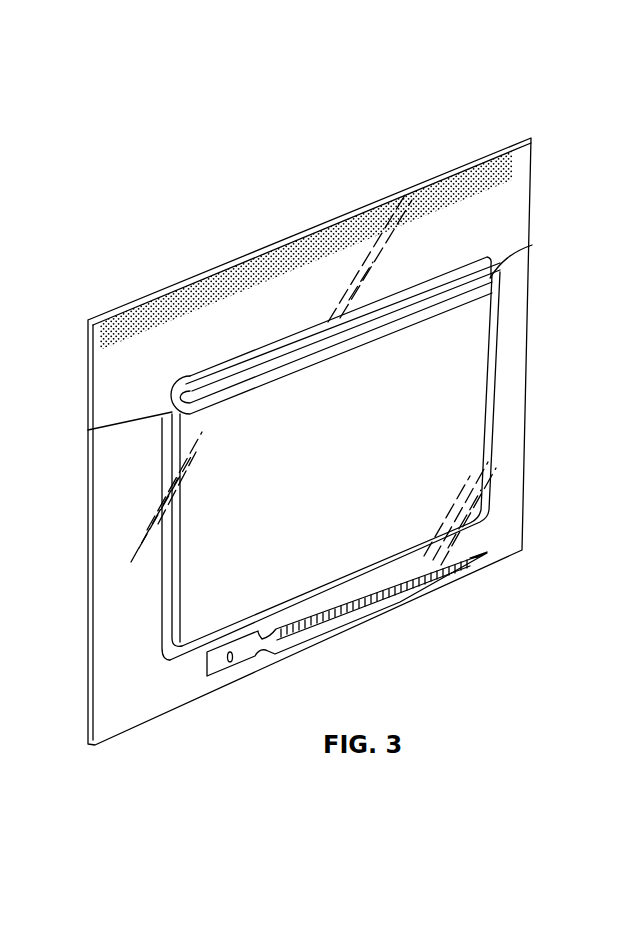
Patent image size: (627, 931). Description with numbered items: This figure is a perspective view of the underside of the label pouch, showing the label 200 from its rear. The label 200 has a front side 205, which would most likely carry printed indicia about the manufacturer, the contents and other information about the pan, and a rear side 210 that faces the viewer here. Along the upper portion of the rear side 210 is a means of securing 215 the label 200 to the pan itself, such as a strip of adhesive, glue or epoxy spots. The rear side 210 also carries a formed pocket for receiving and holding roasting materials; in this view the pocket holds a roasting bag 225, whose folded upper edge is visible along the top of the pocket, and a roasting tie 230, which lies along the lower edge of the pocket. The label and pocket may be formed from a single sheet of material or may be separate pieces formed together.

The label 200 is at (131, 263).
The front side 205 is at (186, 280).
The rear side 210 is at (522, 217).
The means of securing 215 is at (498, 170).
The roasting bag 225 is at (408, 292).
The roasting tie 230 is at (440, 572).